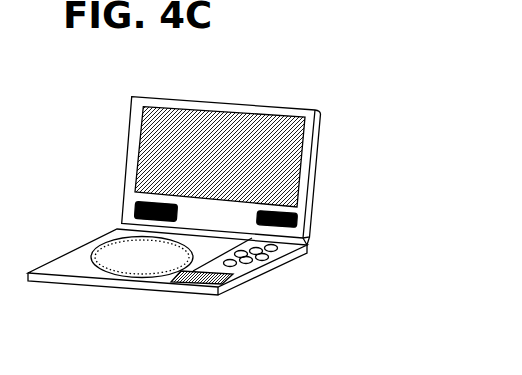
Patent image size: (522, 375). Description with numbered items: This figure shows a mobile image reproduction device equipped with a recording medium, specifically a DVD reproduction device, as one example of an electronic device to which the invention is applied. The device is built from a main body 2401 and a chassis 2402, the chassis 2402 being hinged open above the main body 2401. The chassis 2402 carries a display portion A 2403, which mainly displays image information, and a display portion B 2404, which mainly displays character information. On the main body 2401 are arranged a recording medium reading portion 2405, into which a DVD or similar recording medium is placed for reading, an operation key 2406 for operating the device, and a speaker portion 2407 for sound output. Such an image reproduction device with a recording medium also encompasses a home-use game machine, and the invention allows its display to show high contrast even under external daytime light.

The main body 2401 is at (117, 230).
The chassis 2402 is at (135, 147).
The display portion A 2403 is at (248, 125).
The display portion B 2404 is at (215, 295).
The recording medium reading portion 2405 is at (125, 270).
The operation key 2406 is at (288, 258).
The speaker portion 2407 is at (301, 249).